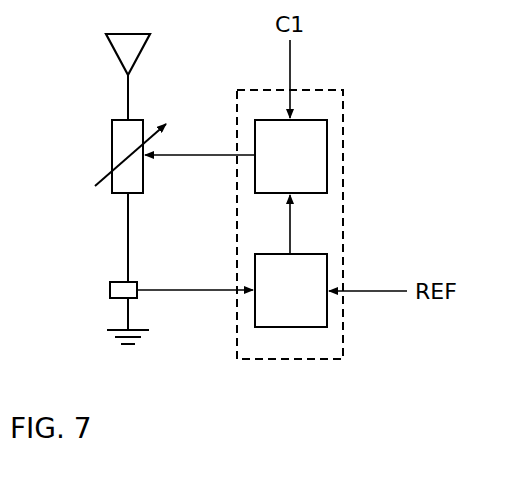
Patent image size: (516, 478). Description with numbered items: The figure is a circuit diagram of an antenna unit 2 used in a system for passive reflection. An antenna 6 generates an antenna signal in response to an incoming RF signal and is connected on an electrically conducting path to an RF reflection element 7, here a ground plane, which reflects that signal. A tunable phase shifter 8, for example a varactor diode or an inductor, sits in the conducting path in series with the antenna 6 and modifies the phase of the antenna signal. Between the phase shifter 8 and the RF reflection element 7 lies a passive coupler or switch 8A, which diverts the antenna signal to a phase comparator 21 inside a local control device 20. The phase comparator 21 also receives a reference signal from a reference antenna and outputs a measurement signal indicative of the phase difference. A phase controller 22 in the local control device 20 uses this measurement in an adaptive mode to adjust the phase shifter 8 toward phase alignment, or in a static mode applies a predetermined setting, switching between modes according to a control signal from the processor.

The antenna unit 2 is at (408, 82).
The antenna 6 is at (142, 48).
The RF reflection element 7 is at (143, 330).
The tunable phase shifter 8 is at (143, 172).
The coupler or switch 8A is at (109, 290).
The local control device 20 is at (343, 193).
The phase comparator 21 is at (303, 290).
The phase controller 22 is at (303, 155).